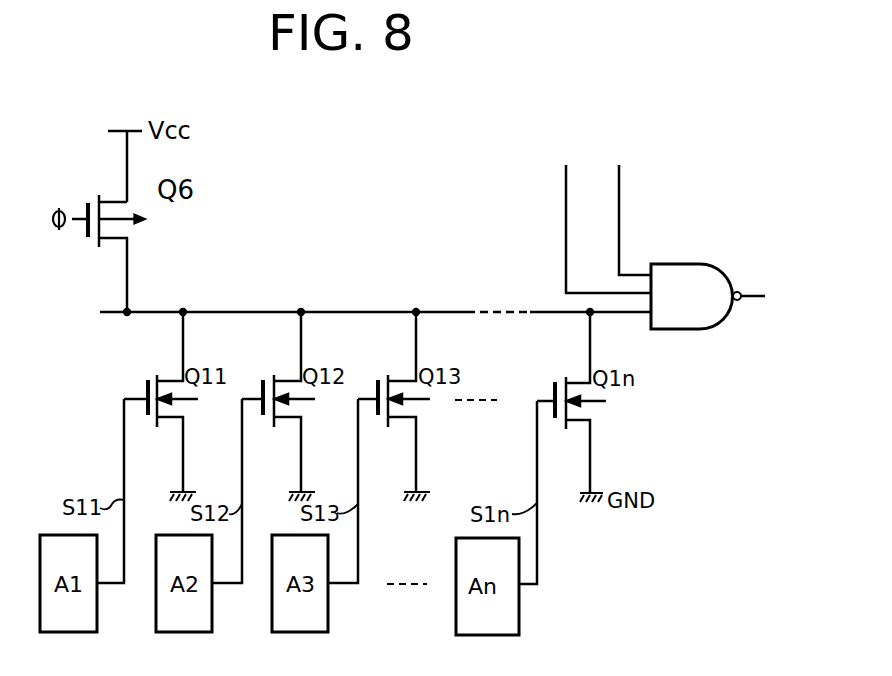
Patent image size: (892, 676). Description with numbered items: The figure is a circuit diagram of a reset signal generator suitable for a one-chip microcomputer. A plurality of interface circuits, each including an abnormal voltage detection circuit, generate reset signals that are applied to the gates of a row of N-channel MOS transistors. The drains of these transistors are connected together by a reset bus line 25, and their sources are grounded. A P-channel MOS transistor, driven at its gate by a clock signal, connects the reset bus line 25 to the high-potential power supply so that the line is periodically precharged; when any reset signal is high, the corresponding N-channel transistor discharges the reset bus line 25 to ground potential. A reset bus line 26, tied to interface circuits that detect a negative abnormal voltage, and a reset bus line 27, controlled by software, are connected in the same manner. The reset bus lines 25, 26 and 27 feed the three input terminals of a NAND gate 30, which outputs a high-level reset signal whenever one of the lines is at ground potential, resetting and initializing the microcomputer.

The reset bus line 25 is at (332, 312).
The reset bus line 26 is at (600, 216).
The reset bus line 27 is at (627, 207).
The NAND gate 30 is at (660, 264).